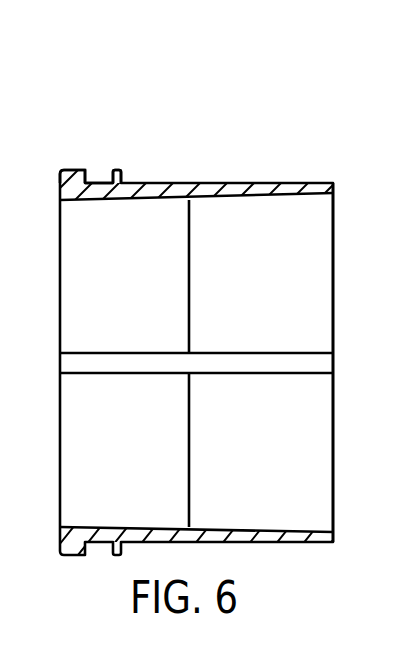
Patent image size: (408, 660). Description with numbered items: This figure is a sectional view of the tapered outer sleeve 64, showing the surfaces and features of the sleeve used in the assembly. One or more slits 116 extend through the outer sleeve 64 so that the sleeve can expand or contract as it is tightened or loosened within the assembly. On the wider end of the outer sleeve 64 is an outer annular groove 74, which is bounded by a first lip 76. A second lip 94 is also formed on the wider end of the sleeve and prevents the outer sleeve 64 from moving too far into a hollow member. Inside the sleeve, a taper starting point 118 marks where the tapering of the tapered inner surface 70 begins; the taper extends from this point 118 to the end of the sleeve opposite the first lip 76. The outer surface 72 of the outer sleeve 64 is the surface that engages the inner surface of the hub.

The outer sleeve 64 is at (290, 110).
The tapered inner surface 70 is at (283, 197).
The outer surface 72 is at (262, 188).
The outer annular groove 74 is at (100, 182).
The first lip 76 is at (62, 178).
The second lip 94 is at (121, 177).
The slits 116 is at (277, 363).
The taper starting point 118 is at (190, 223).